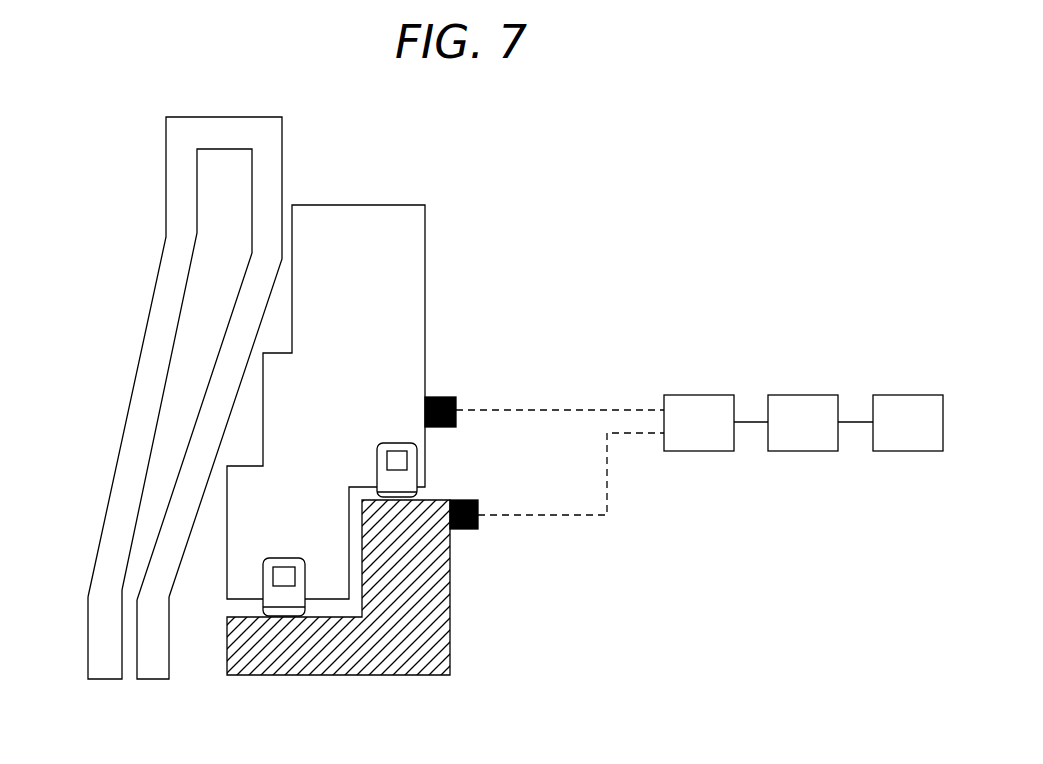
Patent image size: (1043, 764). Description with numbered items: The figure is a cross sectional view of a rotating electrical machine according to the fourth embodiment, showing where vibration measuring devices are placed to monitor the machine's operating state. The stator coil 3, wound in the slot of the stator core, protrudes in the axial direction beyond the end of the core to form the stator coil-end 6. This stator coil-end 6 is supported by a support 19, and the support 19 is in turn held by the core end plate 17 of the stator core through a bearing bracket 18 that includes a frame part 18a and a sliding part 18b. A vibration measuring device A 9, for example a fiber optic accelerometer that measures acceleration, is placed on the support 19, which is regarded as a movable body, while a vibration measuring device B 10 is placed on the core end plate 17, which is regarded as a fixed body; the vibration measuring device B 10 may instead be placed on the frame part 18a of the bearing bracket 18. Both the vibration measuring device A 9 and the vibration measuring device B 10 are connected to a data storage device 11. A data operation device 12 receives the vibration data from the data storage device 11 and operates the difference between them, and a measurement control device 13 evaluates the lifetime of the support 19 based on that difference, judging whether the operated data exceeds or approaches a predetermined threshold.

The stator coil 3 is at (95, 636).
The stator coil-end 6 is at (268, 162).
The vibration measuring device A 9 is at (457, 400).
The vibration measuring device B 10 is at (480, 520).
The data storage device 11 is at (698, 451).
The data operation device 12 is at (802, 451).
The measurement control device 13 is at (908, 451).
The core end plate 17 is at (437, 627).
The bearing bracket 18 is at (418, 524).
The frame part 18a is at (410, 455).
The sliding part 18b is at (400, 463).
The support 19 is at (407, 280).